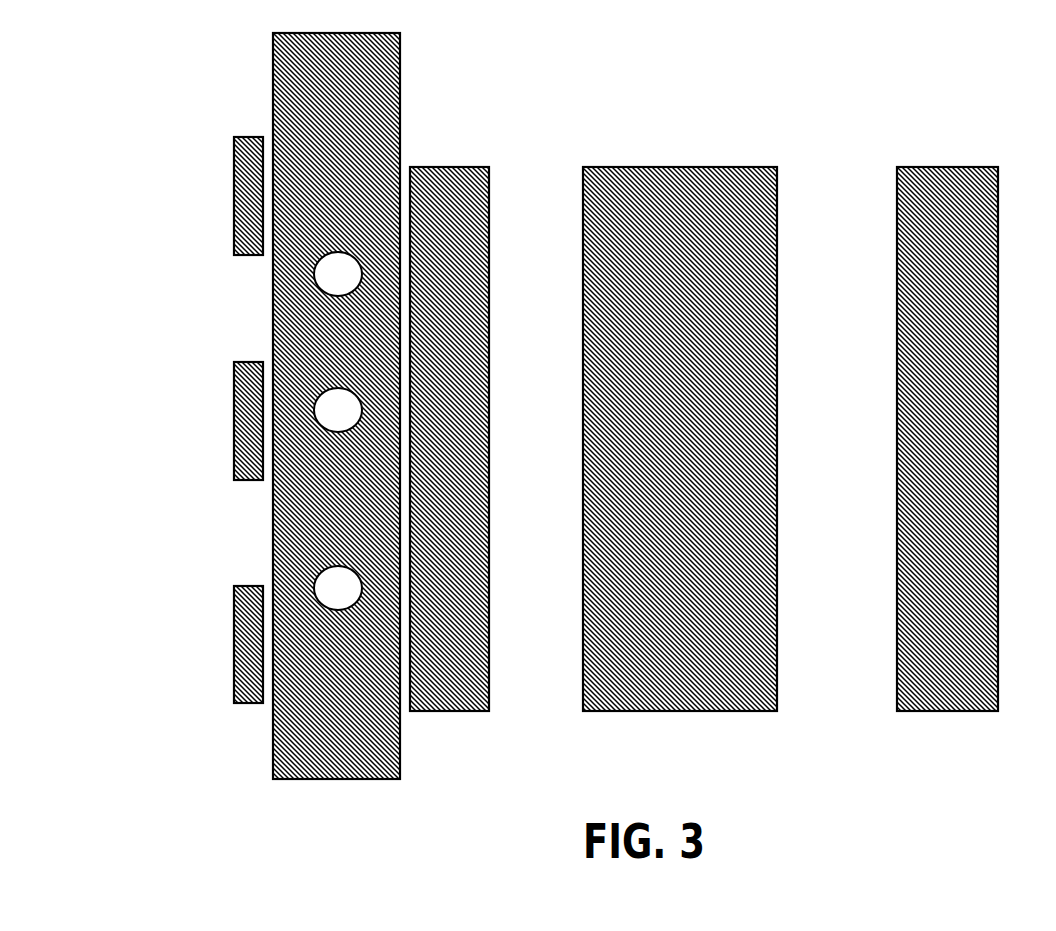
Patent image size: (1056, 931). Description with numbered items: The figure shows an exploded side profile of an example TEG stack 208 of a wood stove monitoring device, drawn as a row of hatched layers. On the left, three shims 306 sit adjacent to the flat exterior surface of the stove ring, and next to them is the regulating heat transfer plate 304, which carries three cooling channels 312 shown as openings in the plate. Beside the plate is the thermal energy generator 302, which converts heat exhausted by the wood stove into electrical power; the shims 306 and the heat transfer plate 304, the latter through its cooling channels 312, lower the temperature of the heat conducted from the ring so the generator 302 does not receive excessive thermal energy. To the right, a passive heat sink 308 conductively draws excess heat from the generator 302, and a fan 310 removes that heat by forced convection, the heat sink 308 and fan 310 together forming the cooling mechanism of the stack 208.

The TEG stack 208 is at (128, 770).
The thermal energy generator 302 is at (448, 707).
The regulating heat transfer plate 304 is at (296, 437).
The shims 306 is at (248, 698).
The passive heat sink 308 is at (680, 700).
The fan 310 is at (938, 700).
The cooling channels 312 is at (333, 582).